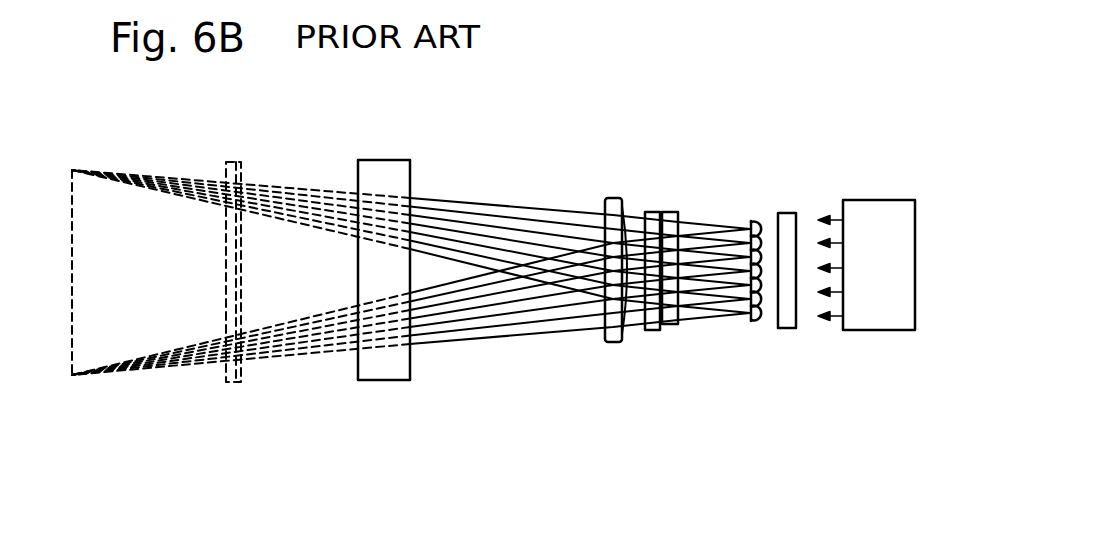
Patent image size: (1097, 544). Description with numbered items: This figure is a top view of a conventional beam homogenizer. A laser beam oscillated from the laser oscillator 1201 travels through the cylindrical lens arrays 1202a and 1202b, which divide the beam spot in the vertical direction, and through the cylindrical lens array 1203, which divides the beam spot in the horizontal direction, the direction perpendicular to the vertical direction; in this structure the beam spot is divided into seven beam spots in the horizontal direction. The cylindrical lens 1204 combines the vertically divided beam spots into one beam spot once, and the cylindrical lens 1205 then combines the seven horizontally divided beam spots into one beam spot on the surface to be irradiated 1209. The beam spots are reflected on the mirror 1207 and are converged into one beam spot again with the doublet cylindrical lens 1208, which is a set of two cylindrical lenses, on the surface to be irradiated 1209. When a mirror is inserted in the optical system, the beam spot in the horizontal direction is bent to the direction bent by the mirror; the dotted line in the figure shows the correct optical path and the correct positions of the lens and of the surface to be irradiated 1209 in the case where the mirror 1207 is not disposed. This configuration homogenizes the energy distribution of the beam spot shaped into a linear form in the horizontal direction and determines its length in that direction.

The laser oscillator 1201 is at (845, 330).
The cylindrical lens array 1202a is at (790, 215).
The cylindrical lens array 1202b is at (670, 212).
The cylindrical lens array 1203 is at (750, 324).
The cylindrical lens 1204 is at (648, 214).
The cylindrical lens 1205 is at (603, 337).
The mirror 1207 is at (378, 381).
The doublet cylindrical lens 1208 is at (240, 376).
The surface to be irradiated 1209 is at (72, 253).